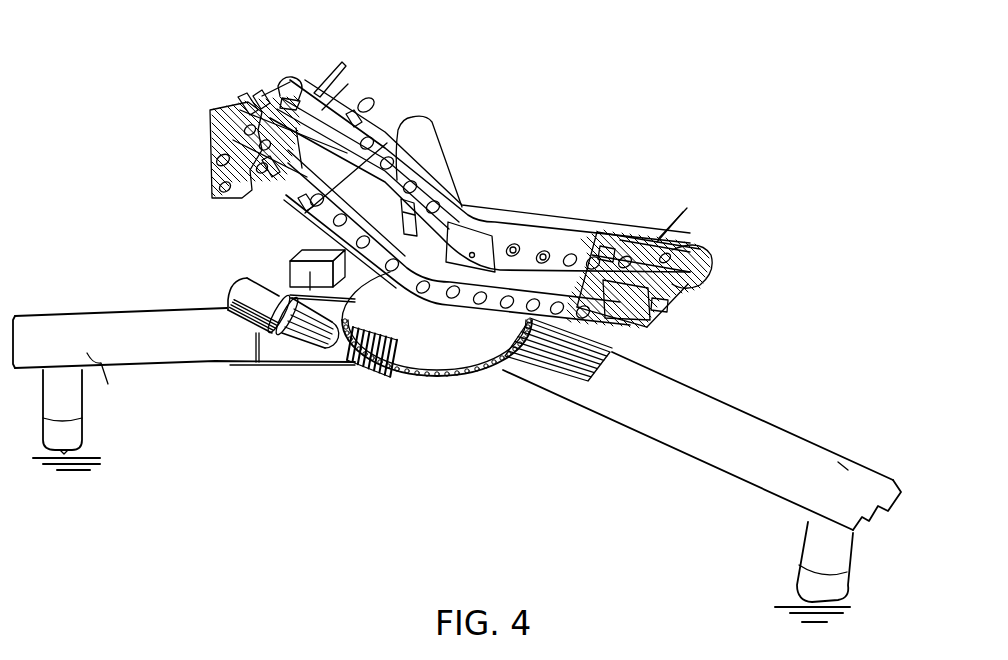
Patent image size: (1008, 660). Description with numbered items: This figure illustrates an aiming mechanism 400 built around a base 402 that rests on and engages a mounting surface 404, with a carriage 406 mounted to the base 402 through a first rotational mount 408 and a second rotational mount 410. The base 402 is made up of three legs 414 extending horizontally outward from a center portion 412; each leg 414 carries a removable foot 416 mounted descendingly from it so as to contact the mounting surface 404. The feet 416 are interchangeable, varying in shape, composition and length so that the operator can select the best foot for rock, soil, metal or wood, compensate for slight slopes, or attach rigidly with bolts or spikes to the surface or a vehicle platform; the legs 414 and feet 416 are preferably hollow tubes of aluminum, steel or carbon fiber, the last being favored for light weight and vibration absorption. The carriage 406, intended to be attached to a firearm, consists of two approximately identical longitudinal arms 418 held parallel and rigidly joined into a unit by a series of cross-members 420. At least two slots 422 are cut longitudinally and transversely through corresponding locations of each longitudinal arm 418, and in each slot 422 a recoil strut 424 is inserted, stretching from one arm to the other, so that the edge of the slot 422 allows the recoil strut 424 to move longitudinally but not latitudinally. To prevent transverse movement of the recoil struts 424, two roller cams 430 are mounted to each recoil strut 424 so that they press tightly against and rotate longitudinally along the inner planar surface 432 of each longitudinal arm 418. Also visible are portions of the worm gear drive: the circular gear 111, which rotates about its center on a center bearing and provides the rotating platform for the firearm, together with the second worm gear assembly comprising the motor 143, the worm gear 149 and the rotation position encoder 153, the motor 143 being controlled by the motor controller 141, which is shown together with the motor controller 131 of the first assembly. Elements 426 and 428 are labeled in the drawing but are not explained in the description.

The aiming mechanism 400 is at (459, 326).
The base 402 is at (116, 267).
The mounting surface 404 is at (441, 539).
The carriage 406 is at (168, 178).
The first rotational mount 408 is at (533, 237).
The second rotational mount 410 is at (500, 223).
The center portion 412 is at (494, 374).
The leg 414 is at (857, 448).
The removable foot 416 is at (85, 428).
The longitudinal arm 418 is at (330, 224).
The cross-member 420 is at (276, 74).
The slot 422 is at (345, 63).
The recoil strut 424 is at (300, 205).
The bracket plate 426 is at (252, 112).
The spacer 428 is at (266, 100).
The roller cam 430 is at (353, 117).
The inner planar surface 432 is at (298, 80).
The circular gear 111 is at (430, 376).
The motor controller 131 is at (297, 272).
The motor controller 141 is at (261, 269).
The motor 143 is at (308, 342).
The worm gear 149 is at (360, 378).
The rotation position encoder 153 is at (253, 332).